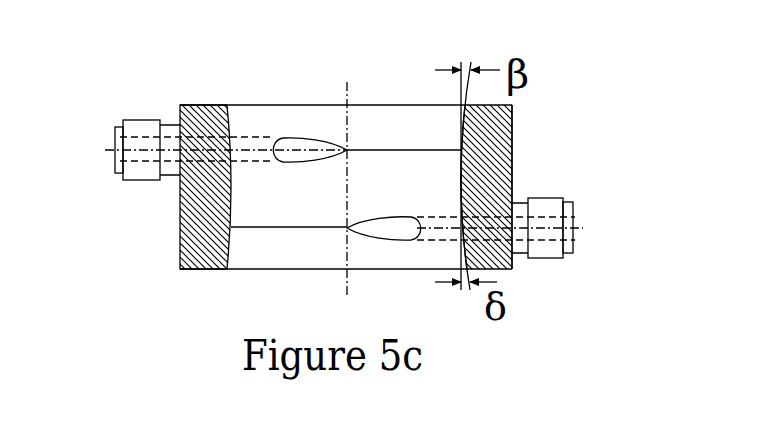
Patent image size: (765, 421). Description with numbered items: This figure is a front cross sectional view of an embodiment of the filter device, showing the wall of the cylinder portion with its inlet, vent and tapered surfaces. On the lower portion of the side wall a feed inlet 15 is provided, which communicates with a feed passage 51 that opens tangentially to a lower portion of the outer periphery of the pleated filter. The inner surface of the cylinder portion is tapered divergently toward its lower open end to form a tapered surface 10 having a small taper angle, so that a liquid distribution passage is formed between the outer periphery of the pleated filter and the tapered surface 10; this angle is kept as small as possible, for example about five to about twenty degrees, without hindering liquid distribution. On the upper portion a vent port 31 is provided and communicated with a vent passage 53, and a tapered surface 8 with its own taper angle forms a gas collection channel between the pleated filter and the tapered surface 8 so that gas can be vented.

The tapered surface 8 is at (465, 112).
The tapered surface 10 is at (460, 258).
The vent passage 53 is at (246, 137).
The feed passage 51 is at (372, 237).
The vent port 31 is at (112, 145).
The feed inlet 15 is at (570, 257).